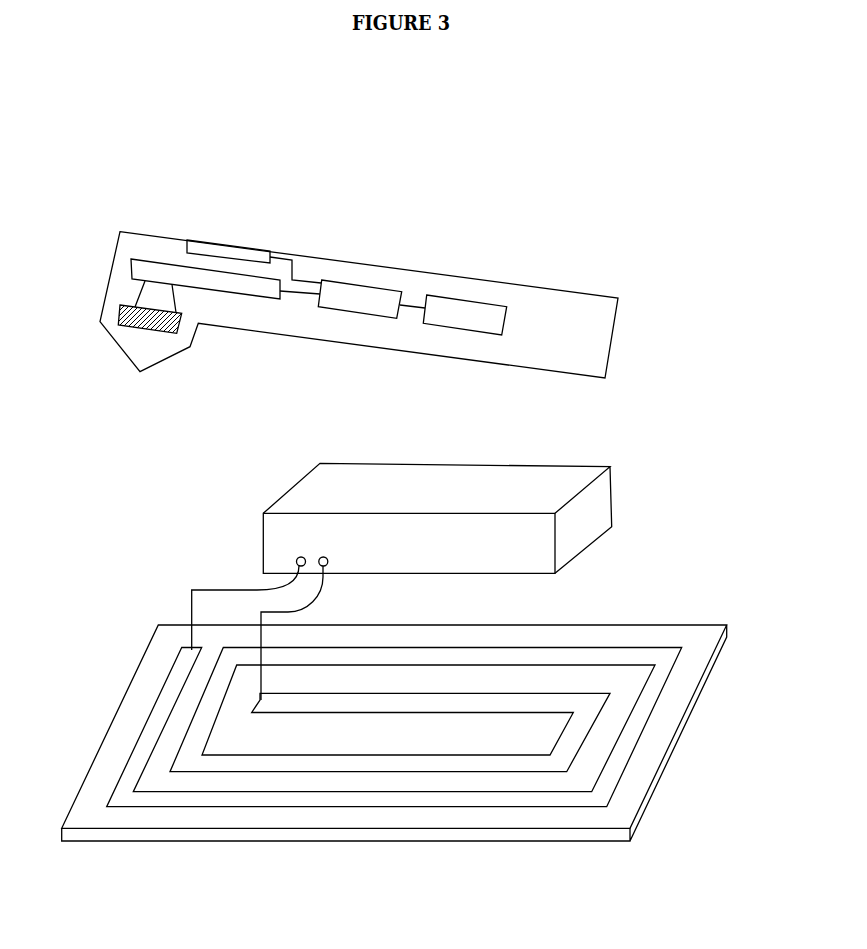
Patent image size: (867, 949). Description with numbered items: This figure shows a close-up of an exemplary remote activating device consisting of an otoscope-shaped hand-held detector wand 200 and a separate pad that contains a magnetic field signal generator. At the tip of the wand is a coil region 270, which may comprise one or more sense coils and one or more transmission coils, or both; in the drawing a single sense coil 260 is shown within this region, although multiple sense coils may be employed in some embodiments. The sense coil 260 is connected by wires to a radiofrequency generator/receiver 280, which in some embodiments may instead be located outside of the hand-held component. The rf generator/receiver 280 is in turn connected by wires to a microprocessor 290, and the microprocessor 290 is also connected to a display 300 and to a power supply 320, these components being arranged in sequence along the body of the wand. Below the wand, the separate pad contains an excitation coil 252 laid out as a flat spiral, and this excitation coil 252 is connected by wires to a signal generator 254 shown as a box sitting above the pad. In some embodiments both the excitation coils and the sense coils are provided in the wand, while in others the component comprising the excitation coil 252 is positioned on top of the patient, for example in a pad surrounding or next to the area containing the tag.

The hand-held detector wand 200 is at (237, 221).
The excitation coil 252 is at (630, 655).
The signal generator 254 is at (608, 460).
The sense coil 260 is at (122, 302).
The coil region 270 is at (110, 281).
The radiofrequency generator/receiver 280 is at (133, 259).
The microprocessor 290 is at (368, 282).
The display 300 is at (188, 240).
The power supply 320 is at (467, 298).